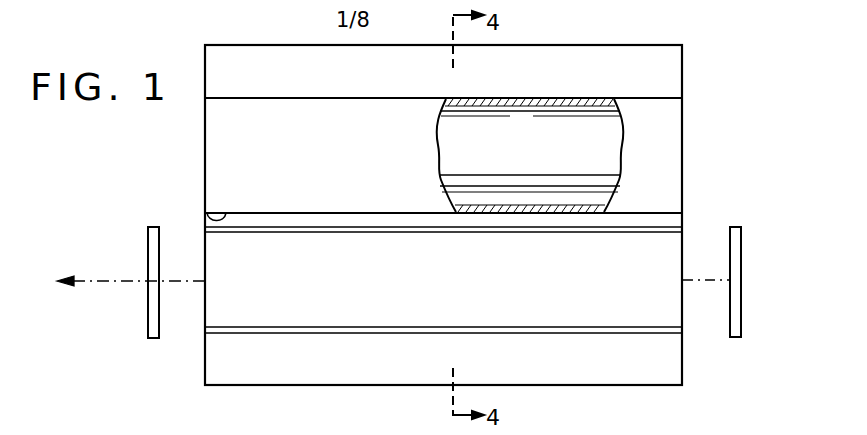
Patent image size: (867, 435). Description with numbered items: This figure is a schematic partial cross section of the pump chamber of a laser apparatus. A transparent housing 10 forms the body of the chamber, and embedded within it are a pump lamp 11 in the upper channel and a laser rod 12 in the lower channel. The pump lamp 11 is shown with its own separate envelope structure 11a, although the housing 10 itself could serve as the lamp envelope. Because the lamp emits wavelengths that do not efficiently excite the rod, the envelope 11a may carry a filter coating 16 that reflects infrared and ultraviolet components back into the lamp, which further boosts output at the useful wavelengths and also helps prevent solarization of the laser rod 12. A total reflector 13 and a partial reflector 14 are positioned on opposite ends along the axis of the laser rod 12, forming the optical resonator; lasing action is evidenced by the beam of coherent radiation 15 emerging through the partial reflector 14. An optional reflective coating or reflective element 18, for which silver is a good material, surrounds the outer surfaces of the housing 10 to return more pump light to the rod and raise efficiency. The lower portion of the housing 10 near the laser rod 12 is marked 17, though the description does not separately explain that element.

The transparent housing 10 is at (348, 87).
The pump lamp 11 is at (215, 116).
The envelope structure 11a is at (557, 207).
The laser rod 12 is at (213, 306).
The total reflector 13 is at (729, 245).
The partial reflector 14 is at (125, 282).
The coherent radiation 15 is at (131, 302).
The filter coating 16 is at (207, 213).
The lower body section 17 is at (423, 360).
The reflective coating or reflective element 18 is at (245, 45).